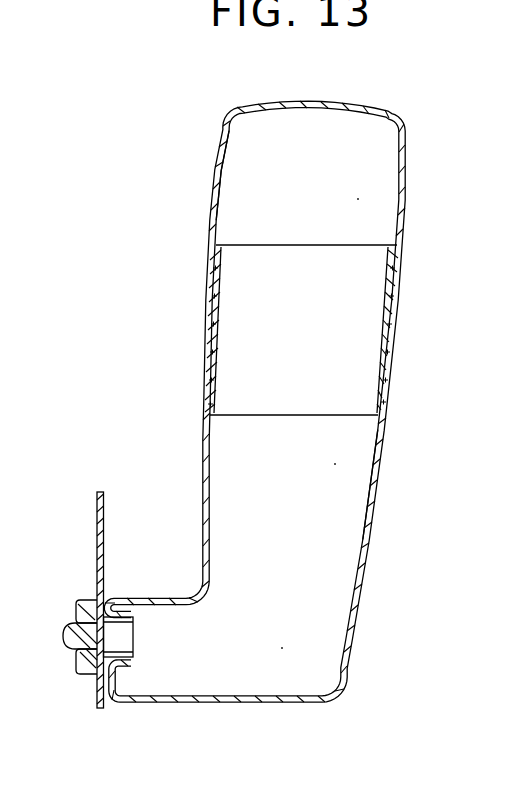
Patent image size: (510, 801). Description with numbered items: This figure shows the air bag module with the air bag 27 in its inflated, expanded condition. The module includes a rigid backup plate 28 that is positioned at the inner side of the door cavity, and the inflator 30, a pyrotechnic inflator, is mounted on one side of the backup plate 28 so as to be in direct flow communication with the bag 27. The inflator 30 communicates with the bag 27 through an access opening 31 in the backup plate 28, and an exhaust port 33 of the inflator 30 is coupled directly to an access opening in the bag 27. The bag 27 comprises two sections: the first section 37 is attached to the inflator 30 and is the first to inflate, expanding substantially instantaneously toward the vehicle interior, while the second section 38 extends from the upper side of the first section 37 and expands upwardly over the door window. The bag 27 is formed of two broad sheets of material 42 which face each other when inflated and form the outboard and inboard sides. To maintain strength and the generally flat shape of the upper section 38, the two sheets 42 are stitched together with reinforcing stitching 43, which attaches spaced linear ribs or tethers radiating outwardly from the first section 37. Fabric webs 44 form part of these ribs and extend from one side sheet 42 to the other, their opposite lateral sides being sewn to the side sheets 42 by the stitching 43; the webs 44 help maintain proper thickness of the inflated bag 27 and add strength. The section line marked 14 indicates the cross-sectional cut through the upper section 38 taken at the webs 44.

The air bag 27 is at (212, 108).
The sheets of material 42 is at (223, 166).
The fabric webs 44 is at (267, 263).
The second section 38 is at (358, 198).
The reinforcing stitching 43 is at (208, 340).
The section line 14 is at (193, 363).
The first section 37 is at (282, 647).
The backup plate 28 is at (96, 530).
The exhaust port 33 is at (134, 656).
The inflator 30 is at (76, 649).
The access opening 31 is at (74, 639).